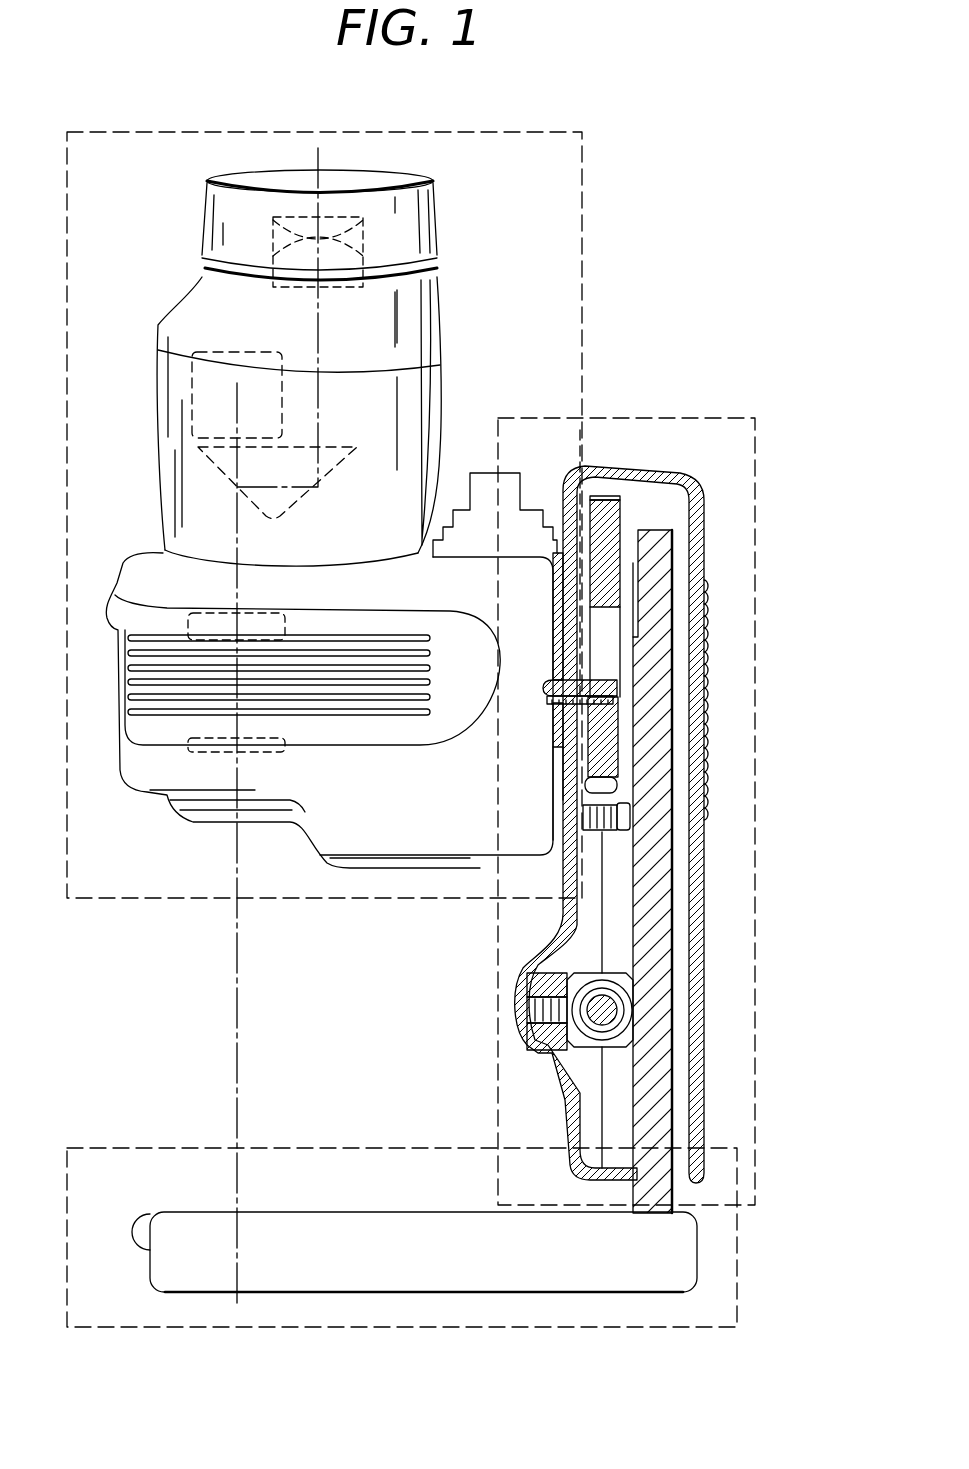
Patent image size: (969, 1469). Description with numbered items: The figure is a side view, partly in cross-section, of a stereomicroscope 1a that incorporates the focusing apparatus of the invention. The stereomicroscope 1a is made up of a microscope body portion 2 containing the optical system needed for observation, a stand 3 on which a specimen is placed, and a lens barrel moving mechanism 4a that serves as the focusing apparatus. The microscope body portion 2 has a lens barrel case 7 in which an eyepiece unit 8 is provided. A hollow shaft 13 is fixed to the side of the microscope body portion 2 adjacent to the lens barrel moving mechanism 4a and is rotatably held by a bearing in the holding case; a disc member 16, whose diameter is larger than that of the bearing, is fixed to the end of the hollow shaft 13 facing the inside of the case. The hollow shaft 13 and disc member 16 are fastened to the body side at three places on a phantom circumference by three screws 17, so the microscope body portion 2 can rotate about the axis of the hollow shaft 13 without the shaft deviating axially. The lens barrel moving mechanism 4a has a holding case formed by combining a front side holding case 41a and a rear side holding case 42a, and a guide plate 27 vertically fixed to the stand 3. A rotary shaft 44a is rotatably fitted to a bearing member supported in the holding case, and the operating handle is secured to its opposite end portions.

The stereomicroscope 1a is at (641, 232).
The microscope body portion 2 is at (482, 132).
The stand 3 is at (737, 1260).
The lens barrel moving mechanism 4a is at (660, 416).
The lens barrel case 7 is at (440, 383).
The eyepiece unit 8 is at (330, 256).
The hollow shaft 13 is at (570, 677).
The disc member 16 is at (627, 567).
The screws 17 is at (617, 697).
The guide plate 27 is at (660, 1062).
The front side holding case 41a is at (560, 933).
The rear side holding case 42a is at (693, 968).
The rotary shaft 44a is at (633, 1010).